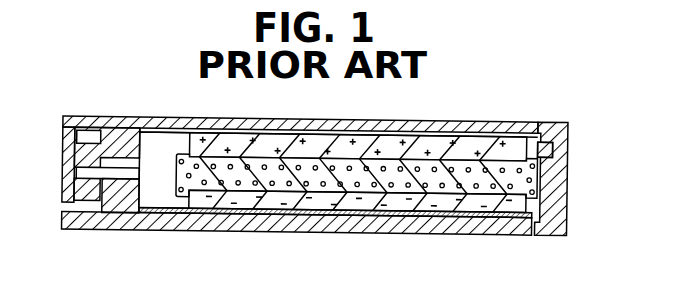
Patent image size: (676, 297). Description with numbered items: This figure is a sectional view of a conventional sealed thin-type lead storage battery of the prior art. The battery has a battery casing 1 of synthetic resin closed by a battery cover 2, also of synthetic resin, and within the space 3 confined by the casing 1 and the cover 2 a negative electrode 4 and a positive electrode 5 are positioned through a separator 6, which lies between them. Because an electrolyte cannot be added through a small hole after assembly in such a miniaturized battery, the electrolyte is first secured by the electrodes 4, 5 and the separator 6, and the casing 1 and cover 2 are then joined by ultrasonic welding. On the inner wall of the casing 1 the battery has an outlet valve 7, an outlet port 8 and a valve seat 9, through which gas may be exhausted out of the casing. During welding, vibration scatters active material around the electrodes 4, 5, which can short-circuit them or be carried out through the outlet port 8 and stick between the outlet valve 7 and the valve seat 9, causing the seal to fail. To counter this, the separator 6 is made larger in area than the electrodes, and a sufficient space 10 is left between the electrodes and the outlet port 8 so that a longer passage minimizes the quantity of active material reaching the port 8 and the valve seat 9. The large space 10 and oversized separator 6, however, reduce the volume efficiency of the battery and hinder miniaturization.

The battery casing 1 is at (428, 227).
The battery cover 2 is at (402, 123).
The space 3 is at (535, 144).
The negative electrode 4 is at (286, 202).
The positive electrode 5 is at (315, 140).
The separator 6 is at (229, 160).
The outlet valve 7 is at (78, 172).
The outlet port 8 is at (118, 175).
The valve seat 9 is at (98, 132).
The space 10 is at (161, 196).